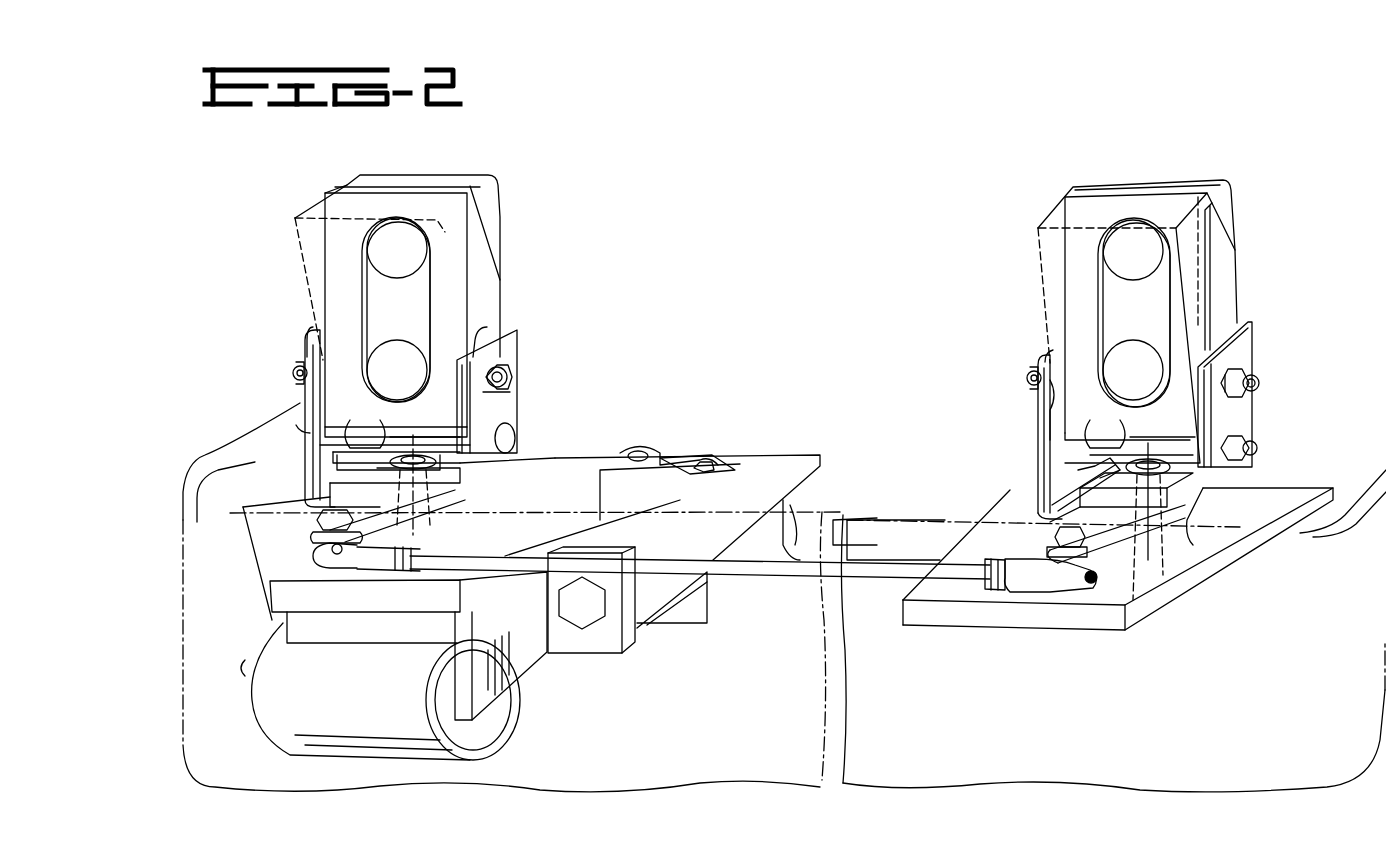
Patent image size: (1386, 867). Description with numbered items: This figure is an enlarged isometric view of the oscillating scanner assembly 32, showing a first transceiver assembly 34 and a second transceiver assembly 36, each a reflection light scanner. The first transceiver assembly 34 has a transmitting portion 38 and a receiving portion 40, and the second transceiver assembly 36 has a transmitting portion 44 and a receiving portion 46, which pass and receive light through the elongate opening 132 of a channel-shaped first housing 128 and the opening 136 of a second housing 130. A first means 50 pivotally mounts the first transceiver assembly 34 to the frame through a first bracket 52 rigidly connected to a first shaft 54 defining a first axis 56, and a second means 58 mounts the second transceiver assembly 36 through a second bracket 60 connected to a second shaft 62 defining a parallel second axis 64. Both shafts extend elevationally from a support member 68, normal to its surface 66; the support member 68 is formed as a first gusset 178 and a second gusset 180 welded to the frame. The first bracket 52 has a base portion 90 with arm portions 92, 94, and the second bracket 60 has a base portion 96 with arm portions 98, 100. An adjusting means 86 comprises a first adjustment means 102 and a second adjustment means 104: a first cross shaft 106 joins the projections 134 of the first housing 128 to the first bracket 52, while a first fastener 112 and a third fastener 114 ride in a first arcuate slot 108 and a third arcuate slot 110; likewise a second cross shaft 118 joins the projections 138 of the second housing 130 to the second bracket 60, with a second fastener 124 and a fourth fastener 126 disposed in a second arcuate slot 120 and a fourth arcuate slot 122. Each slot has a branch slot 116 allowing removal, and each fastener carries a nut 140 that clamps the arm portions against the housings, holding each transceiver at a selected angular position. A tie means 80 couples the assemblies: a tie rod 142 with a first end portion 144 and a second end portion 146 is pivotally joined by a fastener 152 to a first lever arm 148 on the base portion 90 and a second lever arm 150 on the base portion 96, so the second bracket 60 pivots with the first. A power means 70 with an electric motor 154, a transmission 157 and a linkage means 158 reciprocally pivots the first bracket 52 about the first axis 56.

The trailer hitch assembly 32 is at (1168, 132).
The first transceiver assembly 34 is at (503, 250).
The second transceiver assembly 36 is at (1060, 277).
The transmitting portion 38 is at (425, 247).
The receiving portion 40 is at (418, 352).
The transmitting portion 44 is at (1108, 248).
The receiving portion 46 is at (1113, 344).
The first means 50 is at (335, 463).
The first bracket 52 is at (295, 500).
The first shaft 54 is at (457, 512).
The first axis 56 is at (427, 533).
The second means 58 is at (1083, 477).
The second bracket 60 is at (1187, 513).
The second shaft 62 is at (1157, 550).
The second axis 64 is at (1170, 573).
The surface 66 is at (573, 467).
The support member 68 is at (653, 463).
The power means 70 is at (623, 690).
The tie means 80 is at (1003, 594).
The adjusting means 86 is at (545, 333).
The base portion 90 is at (318, 484).
The first arm portion 92 is at (508, 409).
The second arm portion 94 is at (298, 428).
The base portion 96 is at (1077, 513).
The first arm portion 98 is at (1240, 420).
The second arm portion 100 is at (1037, 435).
The first adjustment means 102 is at (275, 370).
The second adjustment means 104 is at (1018, 390).
The first cross shaft 106 is at (360, 438).
The first arcuate slot 108 is at (452, 394).
The third arcuate slot 110 is at (323, 390).
The first fastener 112 is at (512, 368).
The third fastener 114 is at (298, 368).
The branch slot 116 is at (315, 353).
The second cross shaft 118 is at (1117, 447).
The second arcuate slot 120 is at (1215, 398).
The fourth arcuate slot 122 is at (1055, 393).
The second fastener 124 is at (1255, 373).
The fourth fastener 126 is at (1027, 377).
The first housing 128 is at (473, 193).
The second housing 130 is at (1220, 223).
The opening 132 is at (423, 286).
The projections 134 is at (360, 446).
The opening 136 is at (1170, 300).
The projections 138 is at (1093, 462).
The nut 140 is at (495, 393).
The tie rod 142 is at (727, 565).
The first end portion 144 is at (283, 556).
The second end portion 146 is at (1027, 583).
The first lever arm 148 is at (318, 525).
The second lever arm 150 is at (1055, 533).
The fastener 152 is at (325, 557).
The electric motor 154 is at (326, 702).
The transmission 157 is at (785, 533).
The linkage means 158 is at (567, 443).
The first gusset 178 is at (568, 498).
The second gusset 180 is at (1232, 520).